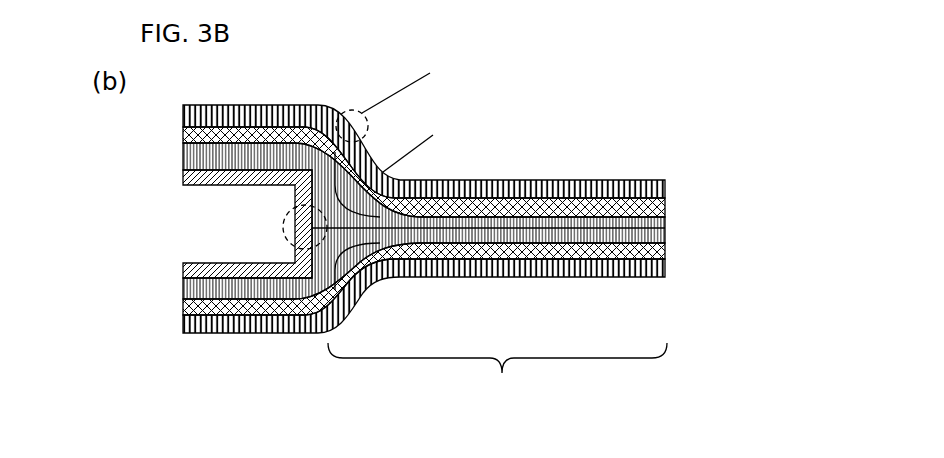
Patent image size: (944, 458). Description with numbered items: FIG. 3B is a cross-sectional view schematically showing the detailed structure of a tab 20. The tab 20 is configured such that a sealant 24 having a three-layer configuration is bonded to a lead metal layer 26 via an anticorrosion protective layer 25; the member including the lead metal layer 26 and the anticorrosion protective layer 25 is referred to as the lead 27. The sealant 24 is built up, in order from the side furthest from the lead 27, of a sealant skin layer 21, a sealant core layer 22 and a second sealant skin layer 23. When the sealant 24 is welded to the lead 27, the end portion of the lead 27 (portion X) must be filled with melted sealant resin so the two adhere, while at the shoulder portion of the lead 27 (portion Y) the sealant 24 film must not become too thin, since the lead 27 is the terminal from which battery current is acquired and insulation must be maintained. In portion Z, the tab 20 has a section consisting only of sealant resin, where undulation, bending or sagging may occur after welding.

The tab 20 is at (449, 236).
The sealant skin layer 21 is at (665, 188).
The sealant core layer 22 is at (665, 207).
The sealant skin layer 23 is at (797, 137).
The sealant 24 is at (526, 219).
The anticorrosion protective layer 25 is at (183, 180).
The lead metal layer 26 is at (233, 225).
The lead 27 is at (171, 235).